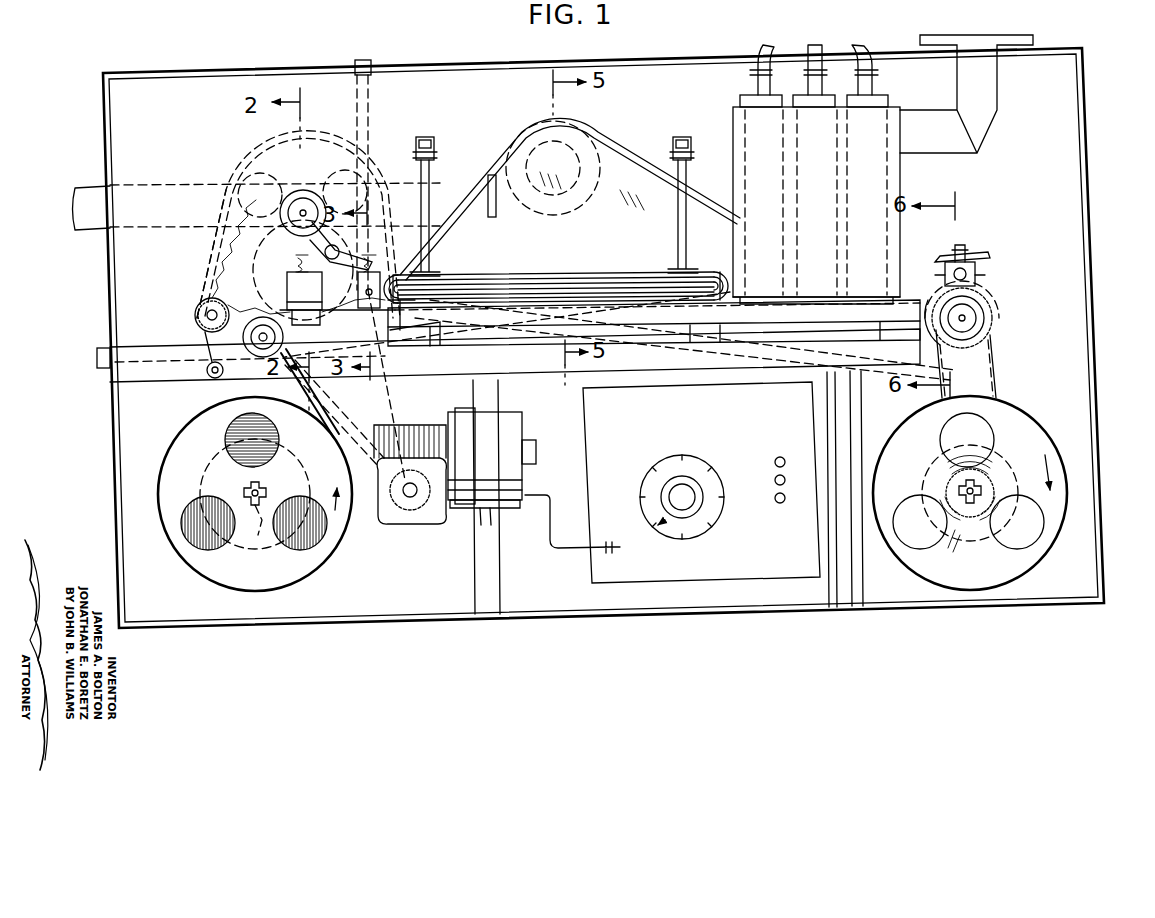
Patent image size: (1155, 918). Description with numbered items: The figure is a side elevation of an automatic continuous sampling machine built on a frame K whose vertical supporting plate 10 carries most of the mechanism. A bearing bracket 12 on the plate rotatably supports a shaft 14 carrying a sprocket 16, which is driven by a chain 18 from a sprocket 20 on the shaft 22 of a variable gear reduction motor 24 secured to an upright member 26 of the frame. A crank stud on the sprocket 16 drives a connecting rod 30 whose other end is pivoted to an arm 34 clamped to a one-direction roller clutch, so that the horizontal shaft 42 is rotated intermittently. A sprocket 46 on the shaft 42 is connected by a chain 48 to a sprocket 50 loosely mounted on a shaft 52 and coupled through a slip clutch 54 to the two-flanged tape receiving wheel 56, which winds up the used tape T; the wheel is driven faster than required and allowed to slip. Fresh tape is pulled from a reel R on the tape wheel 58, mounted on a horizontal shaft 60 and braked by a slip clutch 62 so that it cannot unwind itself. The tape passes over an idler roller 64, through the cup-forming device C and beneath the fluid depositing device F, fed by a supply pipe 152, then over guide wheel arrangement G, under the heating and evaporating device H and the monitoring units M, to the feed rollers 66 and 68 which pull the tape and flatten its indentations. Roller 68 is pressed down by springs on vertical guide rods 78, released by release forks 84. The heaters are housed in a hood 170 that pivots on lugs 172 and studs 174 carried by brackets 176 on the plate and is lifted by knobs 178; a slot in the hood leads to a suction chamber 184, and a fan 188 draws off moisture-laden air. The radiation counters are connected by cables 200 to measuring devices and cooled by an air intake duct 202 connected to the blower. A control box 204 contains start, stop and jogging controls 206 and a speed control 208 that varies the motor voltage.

The vertical supporting plate 10 is at (706, 72).
The bearing bracket 12 is at (287, 223).
The shaft 14 is at (325, 155).
The sprocket 16 is at (243, 284).
The chain 18 is at (211, 236).
The sprocket 20 is at (385, 463).
The shaft 22 is at (411, 497).
The variable gear reduction motor 24 is at (500, 418).
The upright member 26 is at (502, 581).
The connecting rod 30 is at (736, 338).
The arm 34 is at (990, 366).
The horizontal shaft 42 is at (972, 311).
The sprocket 46 is at (994, 335).
The chain 48 is at (941, 432).
The sprocket 50 is at (1040, 452).
The shaft 52 is at (959, 488).
The slip clutch 54 is at (969, 540).
The tape receiving wheel 56 is at (1040, 555).
The tape wheel 58 is at (305, 567).
The horizontal shaft 60 is at (257, 506).
The slip clutch 62 is at (252, 546).
The idler roller 64 is at (258, 323).
The feed roller 66 is at (1001, 312).
The feed roller 68 is at (977, 272).
The vertical guide rod 78 is at (963, 246).
The release fork 84 is at (982, 258).
The supply pipe 152 is at (372, 60).
The hood 170 is at (605, 280).
The lug 172 is at (437, 262).
The stud 174 is at (432, 166).
The bracket 176 is at (434, 148).
The knob 178 is at (340, 322).
The suction chamber 184 is at (622, 163).
The fan 188 is at (588, 205).
The cables 200 is at (856, 44).
The air intake and conducting duct 202 is at (1003, 78).
The control box 204 is at (760, 580).
The start, stop and jogging controls 206 is at (779, 457).
The speed control 208 is at (690, 520).